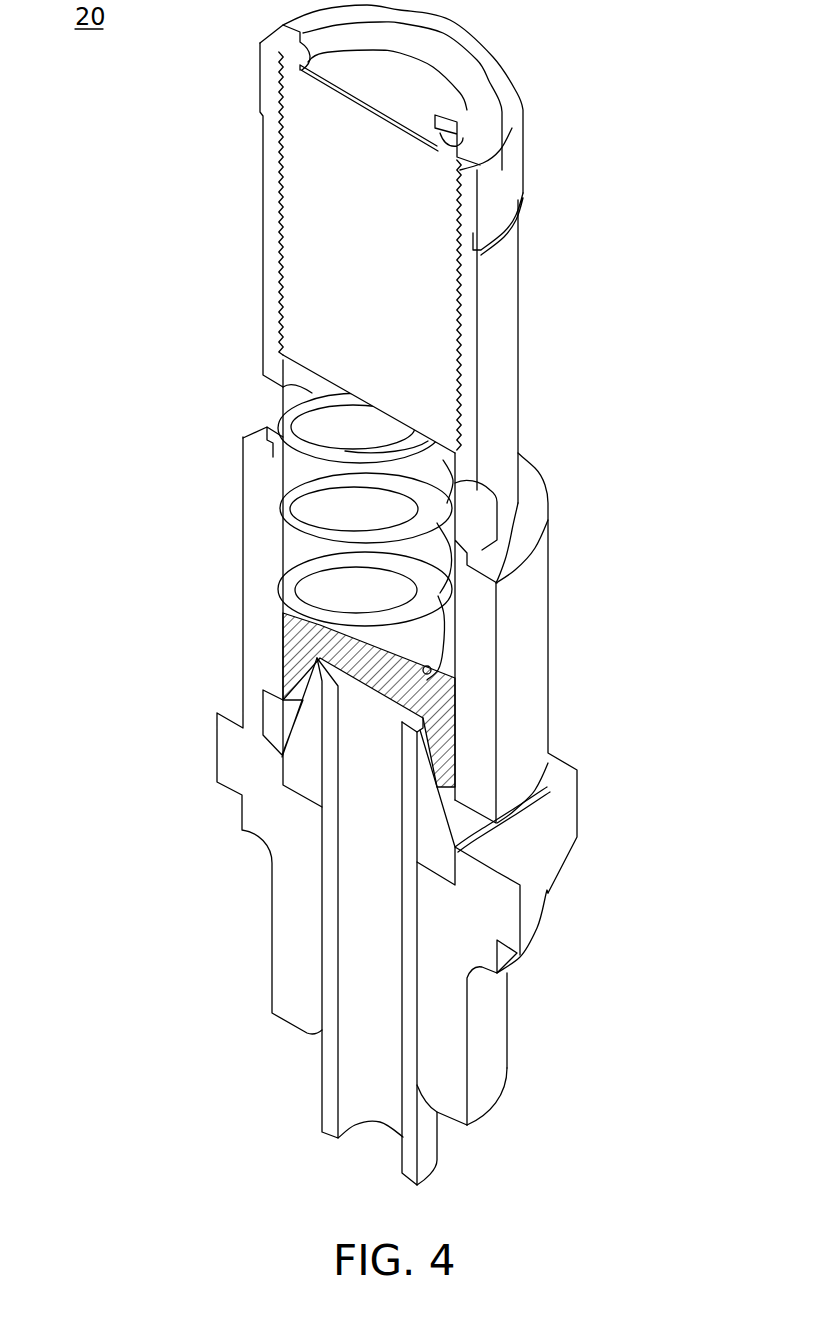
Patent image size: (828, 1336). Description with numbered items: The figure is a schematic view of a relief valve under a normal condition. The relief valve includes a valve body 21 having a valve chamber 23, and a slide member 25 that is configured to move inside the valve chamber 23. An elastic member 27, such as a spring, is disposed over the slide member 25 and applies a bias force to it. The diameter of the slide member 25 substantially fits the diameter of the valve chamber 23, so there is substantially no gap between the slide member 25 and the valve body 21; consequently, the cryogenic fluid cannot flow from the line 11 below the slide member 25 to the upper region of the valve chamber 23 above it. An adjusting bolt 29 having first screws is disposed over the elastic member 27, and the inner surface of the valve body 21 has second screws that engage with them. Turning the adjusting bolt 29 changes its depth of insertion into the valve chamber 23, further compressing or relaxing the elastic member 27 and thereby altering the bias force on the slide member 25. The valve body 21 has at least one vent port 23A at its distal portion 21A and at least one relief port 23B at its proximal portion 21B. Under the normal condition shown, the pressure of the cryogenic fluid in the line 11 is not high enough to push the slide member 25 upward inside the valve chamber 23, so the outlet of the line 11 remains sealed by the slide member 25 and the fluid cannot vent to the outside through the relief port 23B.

The valve body 21 is at (630, 388).
The distal portion 21A is at (498, 412).
The proximal portion 21B is at (537, 587).
The valve chamber 23 is at (408, 650).
The vent port 23A is at (262, 400).
The relief port 23B is at (500, 840).
The slide member 25 is at (293, 640).
The elastic member 27 is at (287, 506).
The adjusting bolt 29 is at (327, 245).
The line 11 is at (330, 1082).